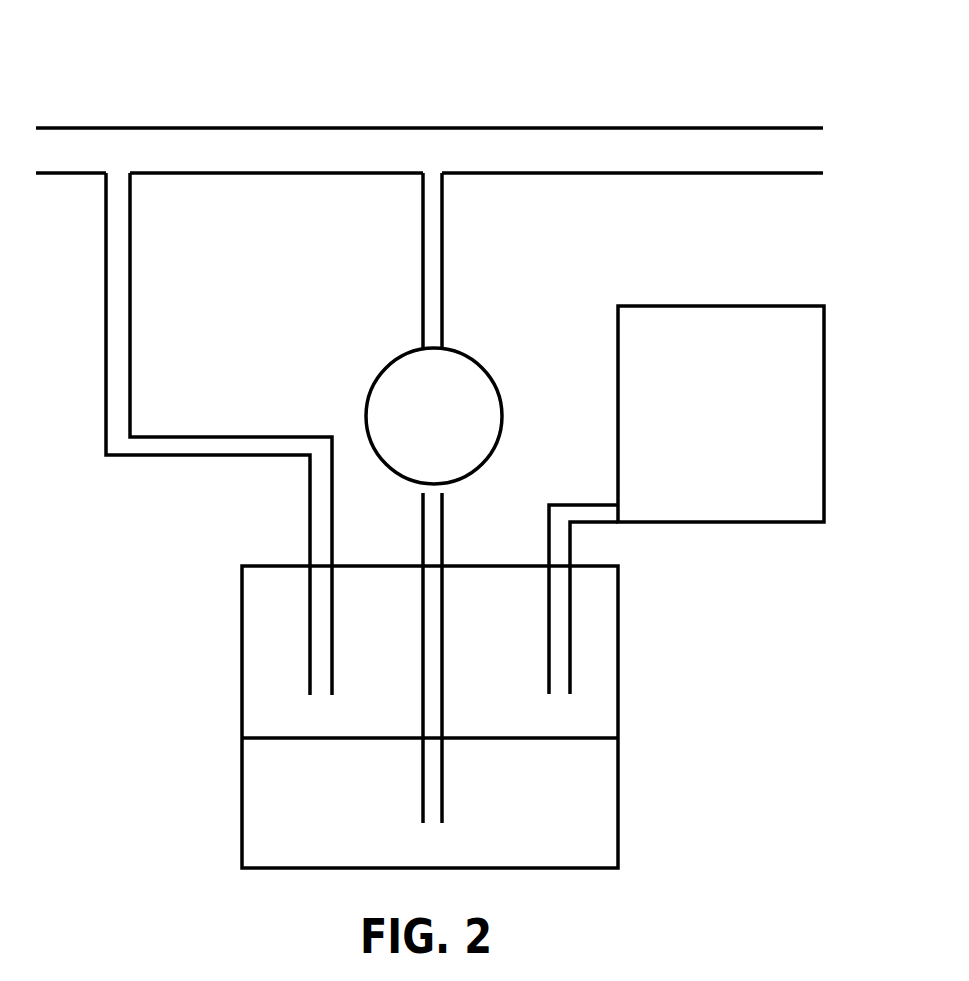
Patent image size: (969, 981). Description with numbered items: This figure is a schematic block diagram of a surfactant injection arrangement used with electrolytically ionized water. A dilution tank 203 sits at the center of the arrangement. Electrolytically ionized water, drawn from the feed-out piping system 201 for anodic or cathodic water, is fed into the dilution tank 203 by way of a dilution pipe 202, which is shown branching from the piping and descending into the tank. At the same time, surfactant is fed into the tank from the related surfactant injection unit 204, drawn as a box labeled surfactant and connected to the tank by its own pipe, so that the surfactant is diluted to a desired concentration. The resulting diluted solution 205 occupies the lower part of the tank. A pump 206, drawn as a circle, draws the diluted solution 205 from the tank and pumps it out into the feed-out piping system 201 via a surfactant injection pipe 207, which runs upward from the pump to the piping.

The feed-out piping system 201 is at (648, 156).
The dilution pipe 202 is at (112, 450).
The dilution tank 203 is at (620, 825).
The surfactant injection unit 204 is at (785, 483).
The diluted solution 205 is at (527, 826).
The pump 206 is at (415, 393).
The surfactant injection pipe 207 is at (432, 218).